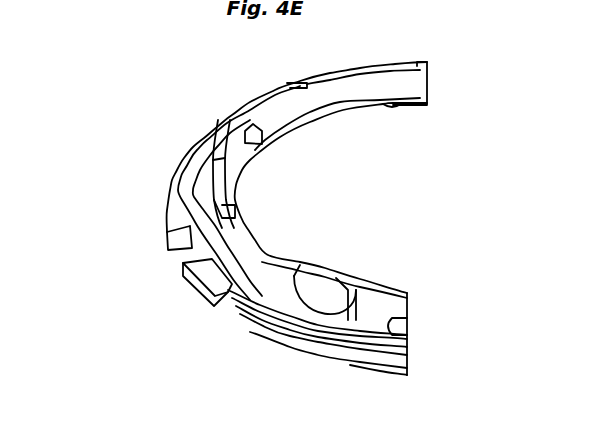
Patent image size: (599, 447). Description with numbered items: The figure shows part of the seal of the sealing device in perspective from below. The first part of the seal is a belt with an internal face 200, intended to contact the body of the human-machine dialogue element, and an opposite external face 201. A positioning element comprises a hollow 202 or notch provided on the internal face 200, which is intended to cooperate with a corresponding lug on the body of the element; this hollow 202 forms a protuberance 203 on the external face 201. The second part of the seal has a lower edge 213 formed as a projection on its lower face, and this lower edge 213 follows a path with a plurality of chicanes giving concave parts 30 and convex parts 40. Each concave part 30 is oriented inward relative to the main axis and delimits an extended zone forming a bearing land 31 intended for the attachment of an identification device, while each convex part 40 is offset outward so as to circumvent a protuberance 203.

The internal face 200 is at (345, 100).
The lower edge 213 is at (203, 148).
The external face 201 is at (240, 242).
The hollow 202 is at (250, 143).
The convex part 40 is at (263, 320).
The protuberance 203 is at (313, 315).
The bearing land 31 is at (122, 446).
The concave part 30 is at (387, 345).